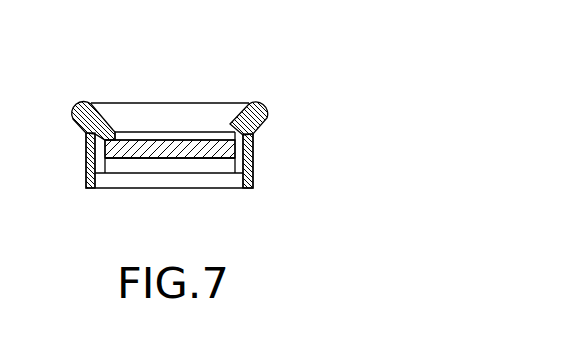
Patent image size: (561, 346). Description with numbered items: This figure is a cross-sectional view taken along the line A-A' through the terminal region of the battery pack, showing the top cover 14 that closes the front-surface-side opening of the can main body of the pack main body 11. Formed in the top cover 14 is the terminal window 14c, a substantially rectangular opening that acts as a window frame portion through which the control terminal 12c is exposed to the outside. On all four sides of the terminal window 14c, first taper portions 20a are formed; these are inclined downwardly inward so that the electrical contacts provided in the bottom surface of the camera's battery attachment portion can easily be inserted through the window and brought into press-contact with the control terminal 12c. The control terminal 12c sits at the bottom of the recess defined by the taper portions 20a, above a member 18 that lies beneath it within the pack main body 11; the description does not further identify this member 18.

The top cover 14 is at (278, 126).
The first taper portions 20a is at (103, 118).
The terminal window 14c is at (165, 120).
The control terminal 12c is at (199, 128).
The pack main body 11 is at (268, 166).
The adhesive layer 18 is at (155, 172).